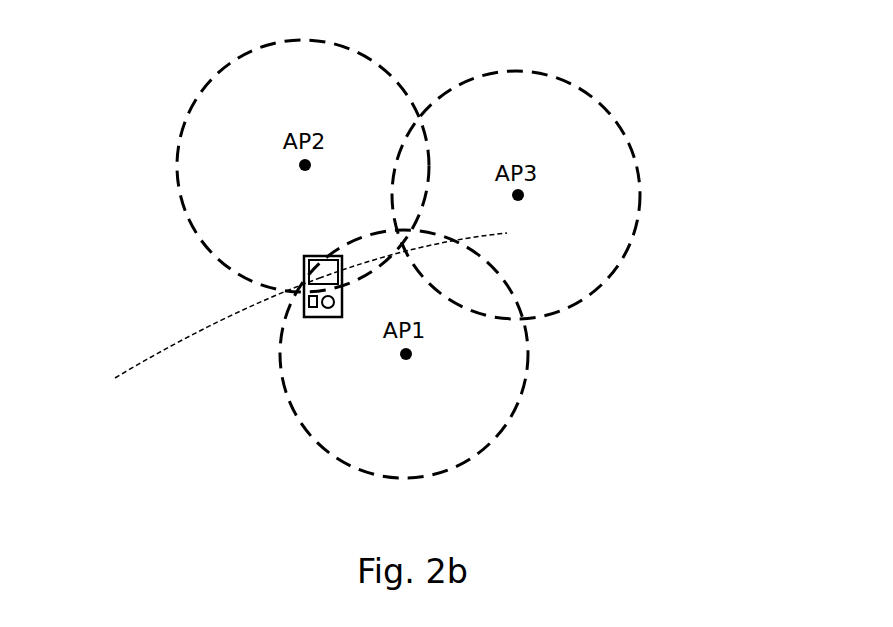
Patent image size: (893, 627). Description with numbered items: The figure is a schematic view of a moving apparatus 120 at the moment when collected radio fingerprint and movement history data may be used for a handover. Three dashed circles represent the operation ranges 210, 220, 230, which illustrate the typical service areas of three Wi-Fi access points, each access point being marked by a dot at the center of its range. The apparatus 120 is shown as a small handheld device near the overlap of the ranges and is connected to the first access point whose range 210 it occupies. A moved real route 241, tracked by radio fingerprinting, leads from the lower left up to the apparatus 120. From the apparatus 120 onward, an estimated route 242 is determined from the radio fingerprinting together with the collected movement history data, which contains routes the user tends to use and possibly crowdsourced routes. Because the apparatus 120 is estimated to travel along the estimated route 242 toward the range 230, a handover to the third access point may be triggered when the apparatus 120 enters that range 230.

The apparatus 120 is at (339, 318).
The operation range of access point AP1 210 is at (367, 354).
The operation range of access point AP2 220 is at (247, 166).
The operation range of access point AP3 230 is at (569, 195).
The moved real route 241 is at (185, 328).
The estimated route 242 is at (452, 260).